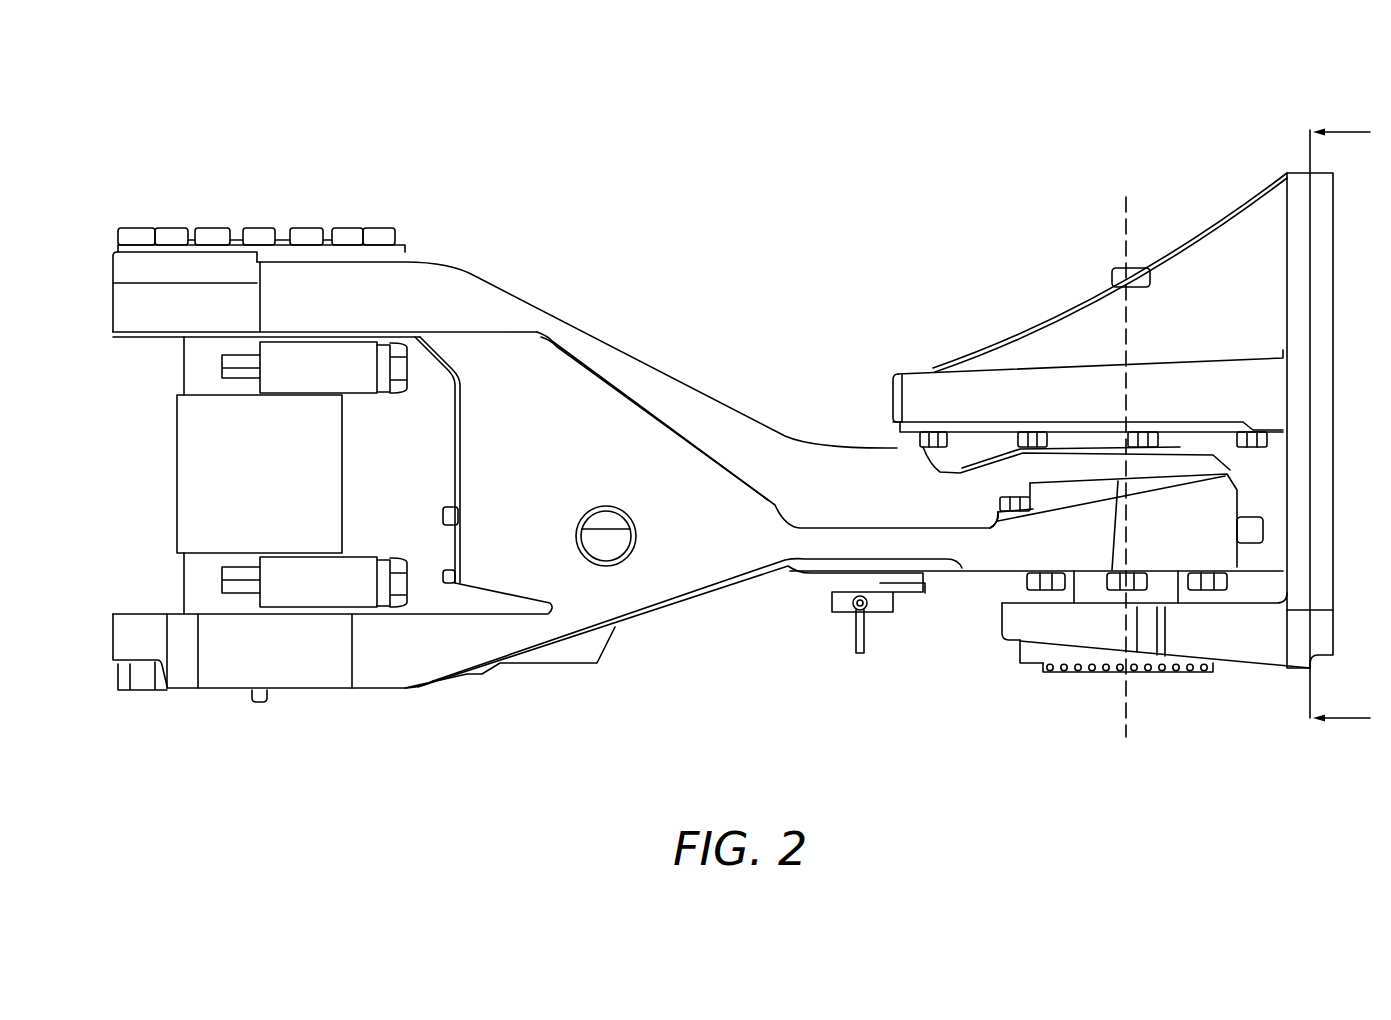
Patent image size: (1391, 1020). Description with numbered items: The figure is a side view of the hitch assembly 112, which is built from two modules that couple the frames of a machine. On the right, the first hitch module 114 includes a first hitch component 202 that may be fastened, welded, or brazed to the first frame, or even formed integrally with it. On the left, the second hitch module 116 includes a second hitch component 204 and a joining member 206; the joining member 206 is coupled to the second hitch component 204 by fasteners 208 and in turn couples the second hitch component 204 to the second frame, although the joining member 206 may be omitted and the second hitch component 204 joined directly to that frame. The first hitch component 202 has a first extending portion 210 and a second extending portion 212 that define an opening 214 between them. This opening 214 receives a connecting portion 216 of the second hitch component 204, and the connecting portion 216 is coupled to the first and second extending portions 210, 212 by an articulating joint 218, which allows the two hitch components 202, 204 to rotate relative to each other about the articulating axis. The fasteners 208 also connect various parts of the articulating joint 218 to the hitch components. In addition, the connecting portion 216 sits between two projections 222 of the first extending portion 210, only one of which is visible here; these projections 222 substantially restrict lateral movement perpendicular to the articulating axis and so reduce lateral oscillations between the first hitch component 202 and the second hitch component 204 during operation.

The hitch assembly 112 is at (315, 97).
The first hitch module 114 is at (1219, 163).
The second hitch module 116 is at (481, 232).
The first hitch component 202 is at (1257, 293).
The second hitch component 204 is at (743, 440).
The joining member 206 is at (207, 480).
The fasteners 208 is at (257, 233).
The first extending portion 210 is at (933, 397).
The second extending portion 212 is at (1070, 633).
The opening 214 is at (1017, 600).
The connecting portion 216 is at (980, 483).
The articulating joint 218 is at (1057, 597).
The projections 222 is at (987, 443).